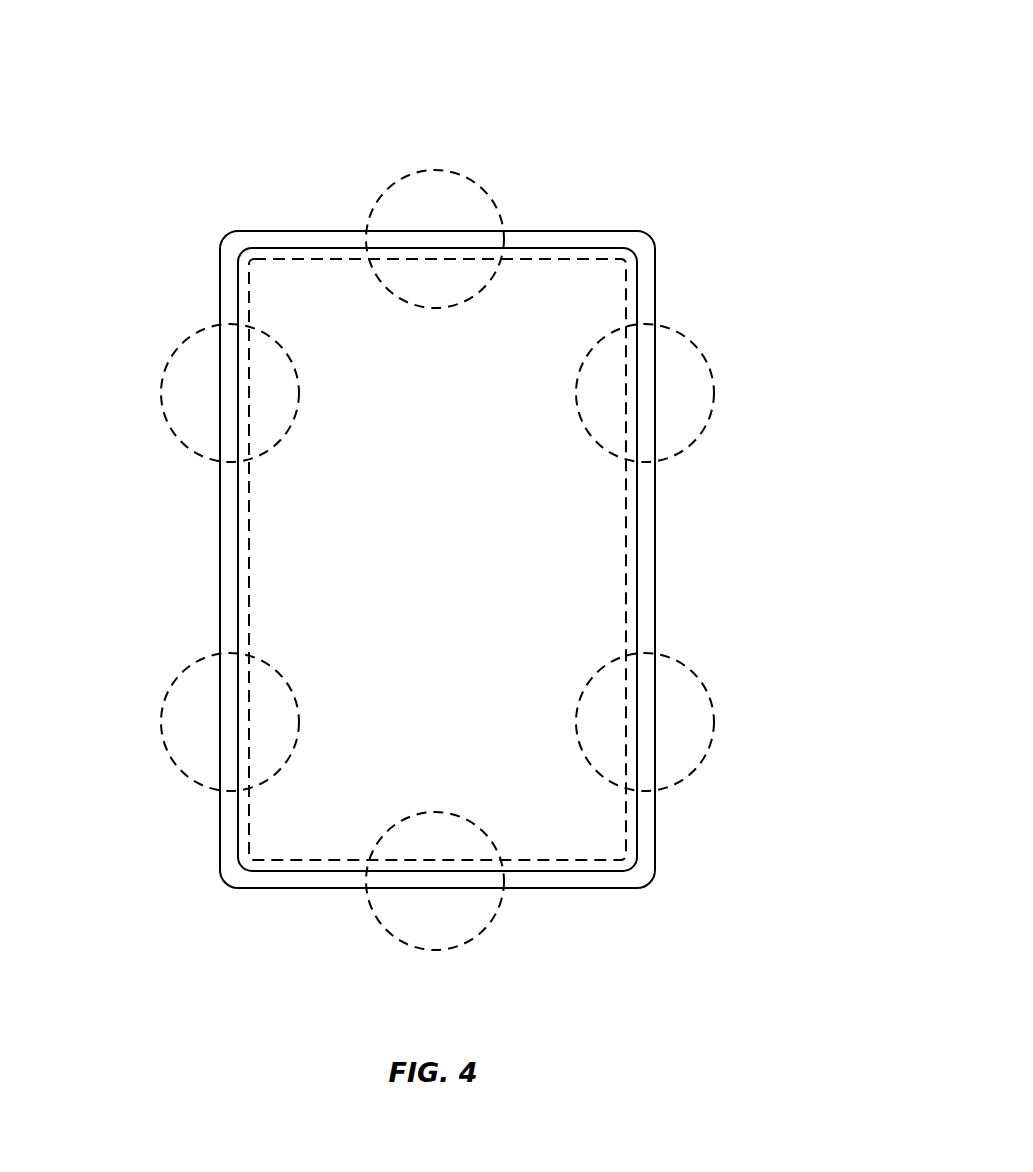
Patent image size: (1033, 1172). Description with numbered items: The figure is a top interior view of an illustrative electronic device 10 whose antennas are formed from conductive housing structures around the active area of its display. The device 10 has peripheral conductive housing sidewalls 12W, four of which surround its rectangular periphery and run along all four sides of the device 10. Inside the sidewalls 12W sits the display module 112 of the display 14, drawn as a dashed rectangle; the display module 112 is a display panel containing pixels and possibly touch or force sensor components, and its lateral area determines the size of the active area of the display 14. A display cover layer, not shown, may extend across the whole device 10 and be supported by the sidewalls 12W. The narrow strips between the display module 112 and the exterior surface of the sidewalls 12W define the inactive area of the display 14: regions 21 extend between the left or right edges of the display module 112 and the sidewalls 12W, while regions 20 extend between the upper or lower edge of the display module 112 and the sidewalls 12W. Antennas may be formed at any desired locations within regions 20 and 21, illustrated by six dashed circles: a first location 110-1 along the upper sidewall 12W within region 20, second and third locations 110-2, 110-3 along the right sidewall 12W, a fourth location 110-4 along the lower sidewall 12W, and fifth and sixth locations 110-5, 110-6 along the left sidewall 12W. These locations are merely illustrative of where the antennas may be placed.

The electronic device 10 is at (459, 484).
The peripheral conductive housing sidewalls 12W is at (540, 238).
The display 14 is at (492, 604).
The display module 112 is at (628, 557).
The regions 20 is at (666, 231).
The regions 21 is at (219, 217).
The first location 110-1 is at (435, 168).
The second location 110-2 is at (707, 362).
The third location 110-3 is at (707, 691).
The fourth location 110-4 is at (430, 950).
The fifth location 110-5 is at (162, 722).
The sixth location 110-6 is at (162, 393).